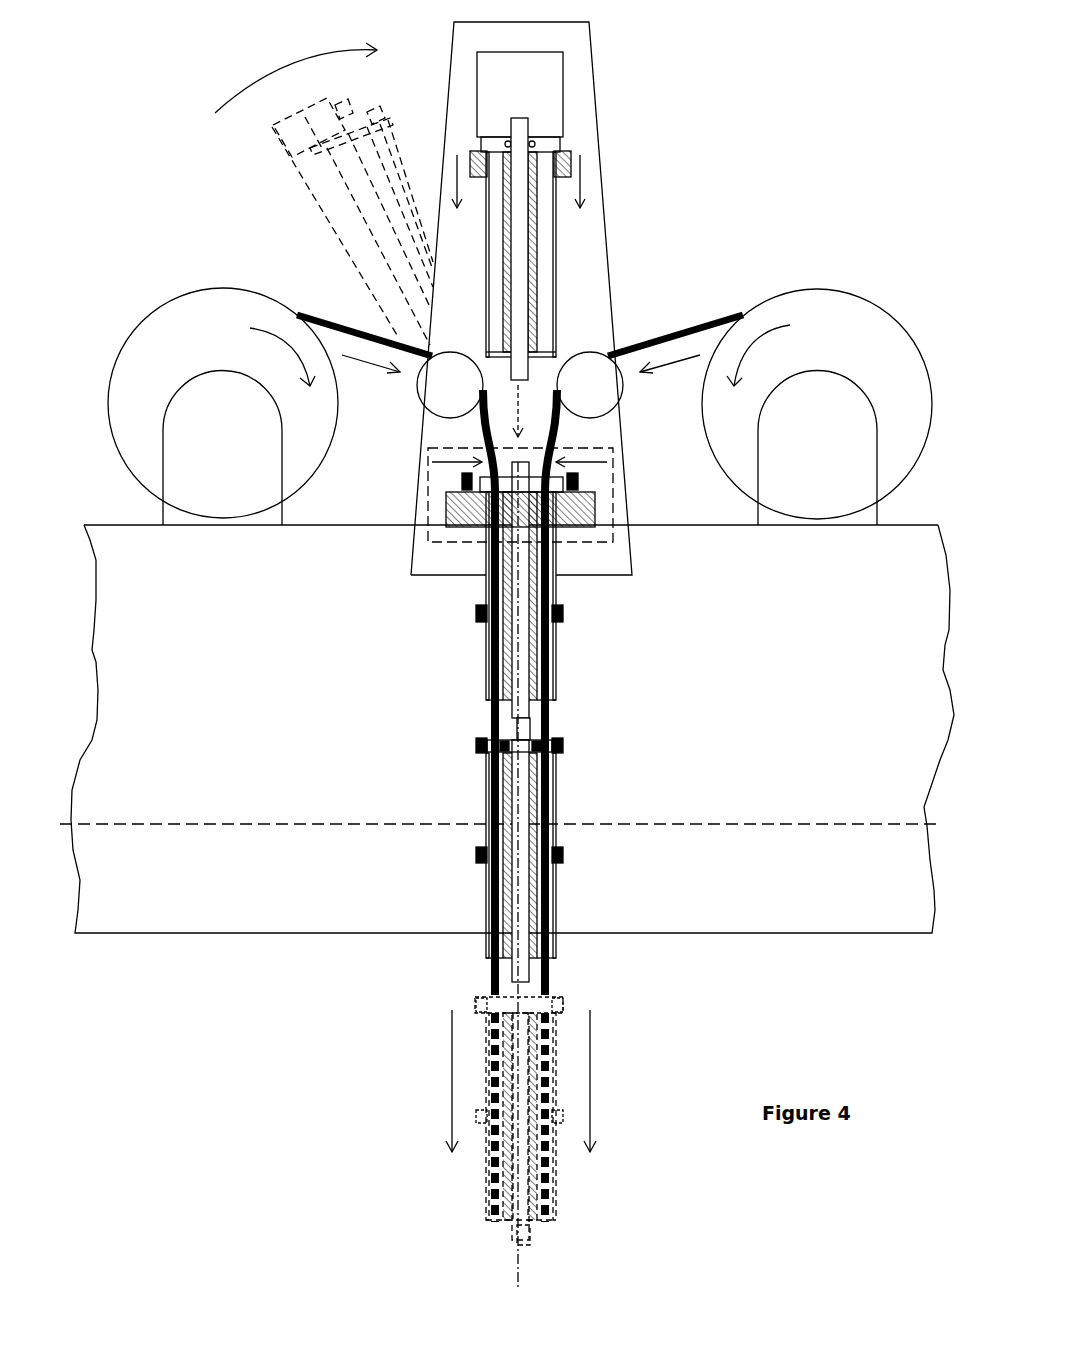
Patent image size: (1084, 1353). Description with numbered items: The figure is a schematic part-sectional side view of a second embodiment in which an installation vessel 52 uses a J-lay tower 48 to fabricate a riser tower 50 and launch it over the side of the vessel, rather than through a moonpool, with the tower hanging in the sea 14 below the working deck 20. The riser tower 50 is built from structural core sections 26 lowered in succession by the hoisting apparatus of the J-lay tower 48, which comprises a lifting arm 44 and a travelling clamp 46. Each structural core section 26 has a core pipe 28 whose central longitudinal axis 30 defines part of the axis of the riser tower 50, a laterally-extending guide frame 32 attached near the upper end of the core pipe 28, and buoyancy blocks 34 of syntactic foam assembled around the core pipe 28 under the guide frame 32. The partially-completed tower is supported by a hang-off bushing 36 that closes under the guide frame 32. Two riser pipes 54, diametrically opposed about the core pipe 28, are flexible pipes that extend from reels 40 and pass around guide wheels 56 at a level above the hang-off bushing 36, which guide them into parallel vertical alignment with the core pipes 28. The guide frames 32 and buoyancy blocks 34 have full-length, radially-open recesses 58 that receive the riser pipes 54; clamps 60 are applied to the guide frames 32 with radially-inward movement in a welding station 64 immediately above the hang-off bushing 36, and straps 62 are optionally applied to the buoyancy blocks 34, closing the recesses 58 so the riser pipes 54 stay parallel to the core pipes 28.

The sea 14 is at (730, 823).
The working deck 20 is at (923, 527).
The structural core section 26 is at (370, 120).
The core pipe 28 is at (518, 135).
The central longitudinal axis 30 is at (520, 1262).
The guide frame 32 is at (478, 140).
The buoyancy block 34 is at (553, 282).
The hang-off bushing 36 is at (597, 517).
The reel 40 is at (183, 320).
The lifting arm 44 is at (343, 202).
The travelling clamp 46 is at (568, 160).
The J-lay tower 48 is at (575, 45).
The riser tower 50 is at (385, 990).
The installation vessel 52 is at (122, 628).
The riser pipe 54 is at (325, 318).
The guide wheel 56 is at (427, 395).
The recess 58 is at (543, 140).
The clamp 60 is at (463, 480).
The strap 62 is at (565, 610).
The welding station 64 is at (428, 542).